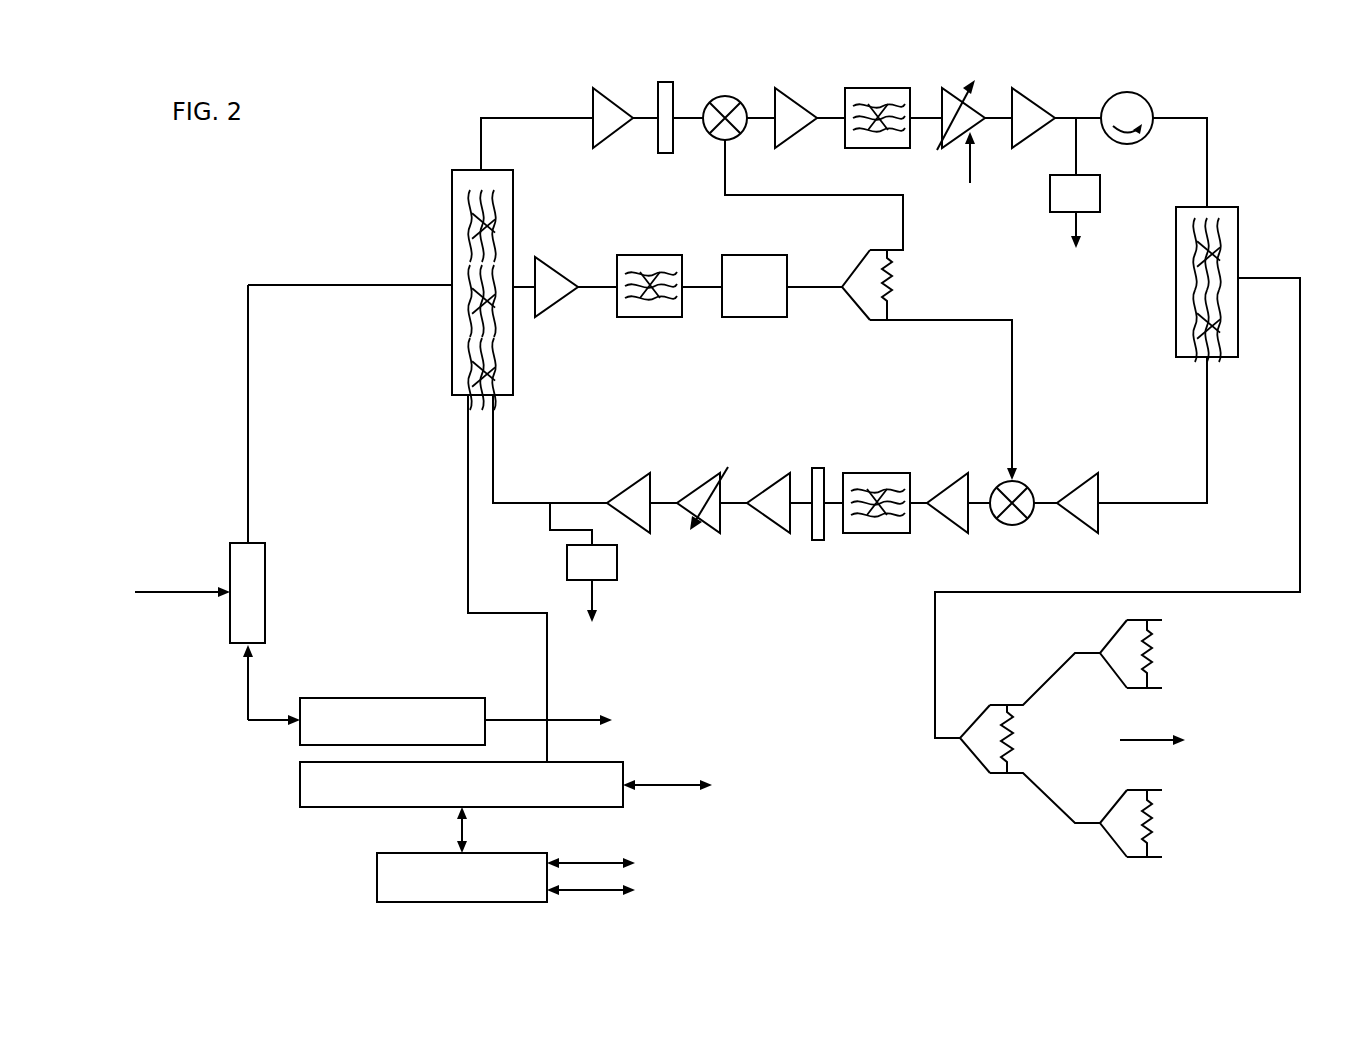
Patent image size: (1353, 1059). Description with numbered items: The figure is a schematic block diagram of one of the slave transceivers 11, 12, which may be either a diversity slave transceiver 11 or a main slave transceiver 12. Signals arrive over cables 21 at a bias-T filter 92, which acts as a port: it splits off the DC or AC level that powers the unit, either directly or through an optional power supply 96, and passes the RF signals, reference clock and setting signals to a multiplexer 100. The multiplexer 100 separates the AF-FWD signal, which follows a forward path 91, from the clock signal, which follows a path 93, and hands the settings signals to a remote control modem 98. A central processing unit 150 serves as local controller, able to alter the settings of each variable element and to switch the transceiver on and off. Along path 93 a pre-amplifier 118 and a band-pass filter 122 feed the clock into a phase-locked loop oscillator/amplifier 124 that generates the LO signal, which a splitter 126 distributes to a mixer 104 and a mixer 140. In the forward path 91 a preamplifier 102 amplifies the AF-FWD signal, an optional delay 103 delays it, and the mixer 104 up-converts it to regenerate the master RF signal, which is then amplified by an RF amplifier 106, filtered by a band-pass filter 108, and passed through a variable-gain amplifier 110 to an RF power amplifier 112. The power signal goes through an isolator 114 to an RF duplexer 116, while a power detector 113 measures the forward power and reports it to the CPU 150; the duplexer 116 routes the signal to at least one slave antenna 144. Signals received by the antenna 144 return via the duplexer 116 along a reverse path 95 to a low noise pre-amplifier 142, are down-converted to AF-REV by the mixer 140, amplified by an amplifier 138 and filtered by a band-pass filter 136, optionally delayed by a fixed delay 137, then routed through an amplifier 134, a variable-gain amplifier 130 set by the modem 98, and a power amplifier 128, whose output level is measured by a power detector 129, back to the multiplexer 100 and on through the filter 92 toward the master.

The diversity slave transceiver 11 is at (308, 222).
The main slave transceiver 12 is at (350, 414).
The cables 21 is at (182, 596).
The forward path 91 is at (570, 86).
The bias-T filter 92 is at (254, 543).
The clock signal path 93 is at (592, 338).
The reverse path 95 is at (1212, 533).
The power supply 96 is at (310, 698).
The remote control modem 98 is at (334, 808).
The multiplexer 100 is at (468, 170).
The preamplifier 102 is at (598, 146).
The delay 103 is at (665, 82).
The mixer 104 is at (729, 94).
The RF amplifier 106 is at (788, 98).
The band-pass filter 108 is at (868, 88).
The variable-gain amplifier 110 is at (942, 142).
The RF power amplifier 112 is at (1029, 98).
The power detector 113 is at (1086, 214).
The isolator 114 is at (1124, 92).
The RF duplexer 116 is at (1222, 207).
The pre-amplifier 118 is at (552, 270).
The band-pass filter 122 is at (651, 317).
The phase-locked loop oscillator/amplifier 124 is at (757, 317).
The splitter 126 is at (892, 268).
The power amplifier 128 is at (634, 486).
The power detector 129 is at (603, 580).
The variable-gain amplifier 130 is at (711, 480).
The amplifier 134 is at (782, 530).
The band-pass filter 136 is at (864, 473).
The fixed delay 137 is at (817, 468).
The amplifier 138 is at (966, 528).
The mixer 140 is at (996, 482).
The low noise pre-amplifier 142 is at (1085, 480).
The slave antenna 144 is at (1027, 670).
The central processing unit 150 is at (508, 853).